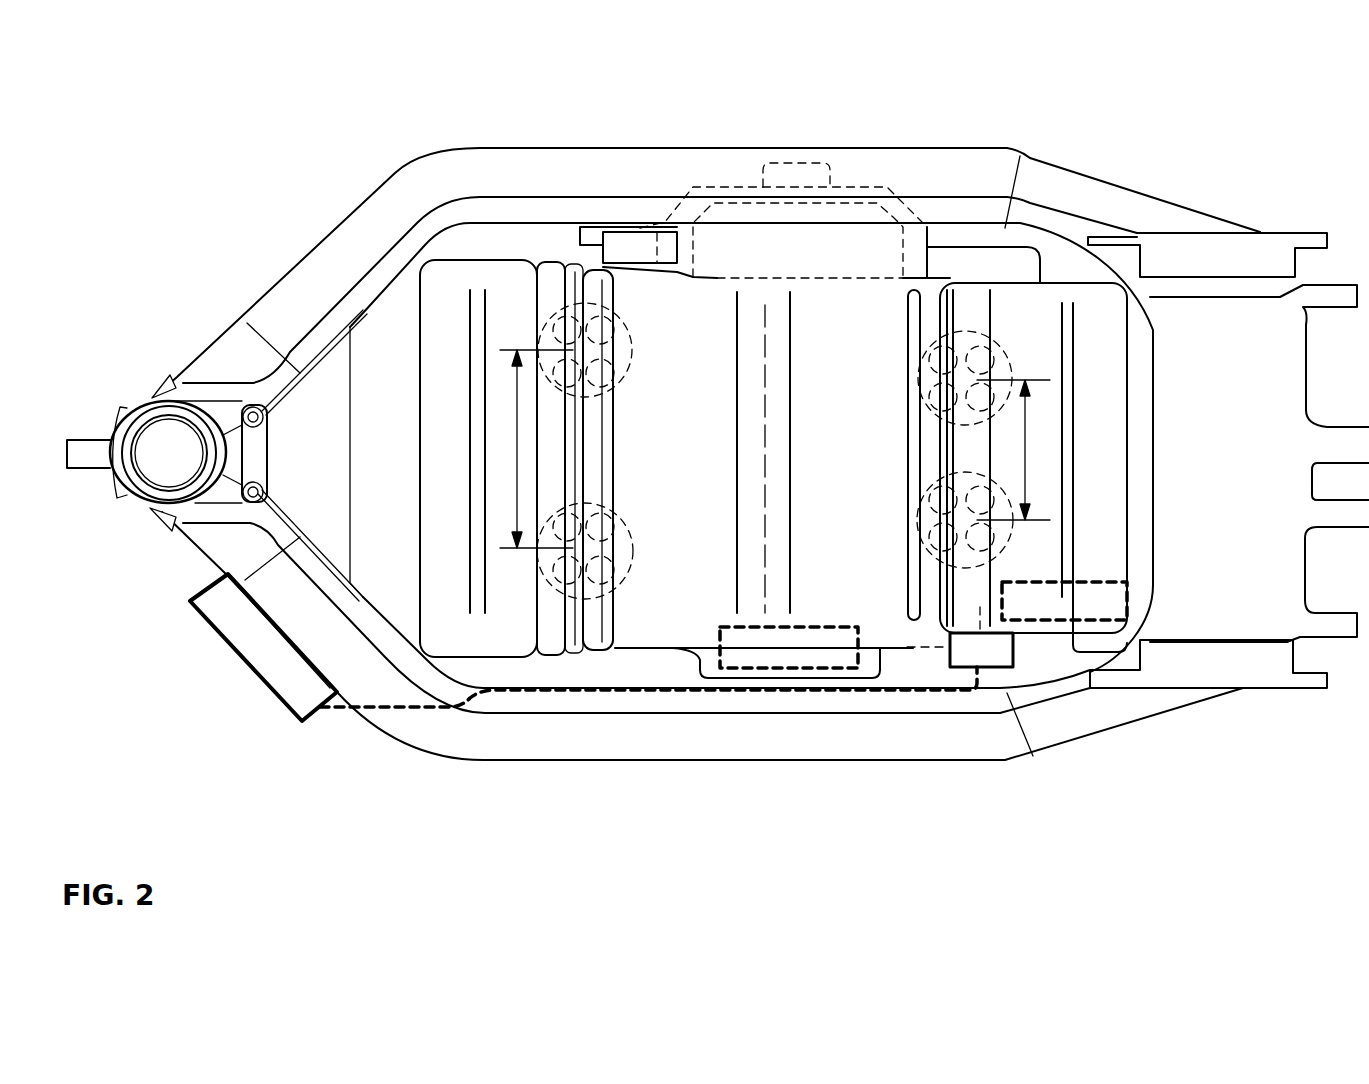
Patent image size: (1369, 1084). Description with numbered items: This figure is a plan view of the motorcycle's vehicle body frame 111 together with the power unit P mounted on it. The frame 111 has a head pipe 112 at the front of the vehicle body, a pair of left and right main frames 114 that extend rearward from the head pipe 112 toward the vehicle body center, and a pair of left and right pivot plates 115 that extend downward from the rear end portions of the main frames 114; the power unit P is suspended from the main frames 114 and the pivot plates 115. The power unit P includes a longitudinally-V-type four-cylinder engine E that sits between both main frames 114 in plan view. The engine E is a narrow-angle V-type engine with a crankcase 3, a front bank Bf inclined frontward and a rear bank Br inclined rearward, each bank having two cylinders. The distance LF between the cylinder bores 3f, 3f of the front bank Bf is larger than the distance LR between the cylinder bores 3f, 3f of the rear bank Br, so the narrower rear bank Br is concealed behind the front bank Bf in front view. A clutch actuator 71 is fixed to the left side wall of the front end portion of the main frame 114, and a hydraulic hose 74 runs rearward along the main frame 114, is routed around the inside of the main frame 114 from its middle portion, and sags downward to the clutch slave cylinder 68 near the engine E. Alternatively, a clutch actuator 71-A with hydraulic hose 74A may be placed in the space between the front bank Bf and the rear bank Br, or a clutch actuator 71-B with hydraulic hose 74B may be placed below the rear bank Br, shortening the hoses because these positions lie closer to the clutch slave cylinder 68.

The vehicle body frame 111 is at (876, 148).
The main frame 114 is at (533, 157).
The pivot plate 115 is at (1140, 207).
The head pipe 112 is at (160, 470).
The crankcase 3 is at (777, 297).
The cylinder bore 3f is at (627, 353).
The clutch actuator 71 is at (277, 683).
The clutch actuator 71-A is at (770, 668).
The clutch actuator 71-B is at (1107, 610).
The hydraulic hose 74 is at (627, 697).
The hydraulic hose 74A is at (907, 647).
The hydraulic hose 74B is at (980, 607).
The clutch slave cylinder 68 is at (1015, 653).
The power unit P is at (443, 243).
The rear bank Br is at (1062, 260).
The front bank Bf is at (422, 640).
The engine E is at (519, 678).
The distance between cylinder bores of the front bank LF is at (525, 449).
The distance between cylinder bores of the rear bank LR is at (1023, 450).